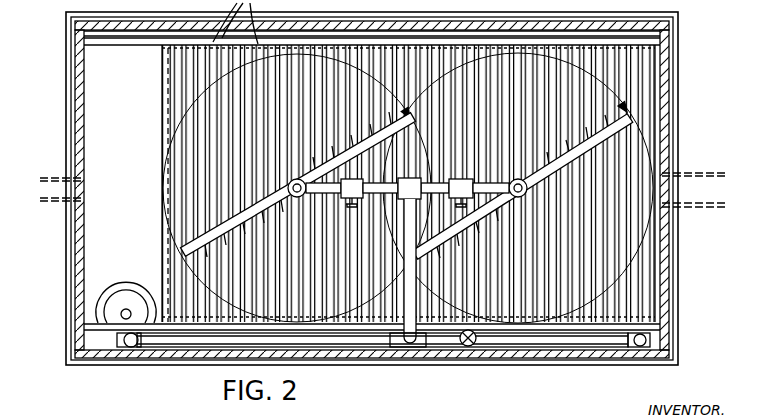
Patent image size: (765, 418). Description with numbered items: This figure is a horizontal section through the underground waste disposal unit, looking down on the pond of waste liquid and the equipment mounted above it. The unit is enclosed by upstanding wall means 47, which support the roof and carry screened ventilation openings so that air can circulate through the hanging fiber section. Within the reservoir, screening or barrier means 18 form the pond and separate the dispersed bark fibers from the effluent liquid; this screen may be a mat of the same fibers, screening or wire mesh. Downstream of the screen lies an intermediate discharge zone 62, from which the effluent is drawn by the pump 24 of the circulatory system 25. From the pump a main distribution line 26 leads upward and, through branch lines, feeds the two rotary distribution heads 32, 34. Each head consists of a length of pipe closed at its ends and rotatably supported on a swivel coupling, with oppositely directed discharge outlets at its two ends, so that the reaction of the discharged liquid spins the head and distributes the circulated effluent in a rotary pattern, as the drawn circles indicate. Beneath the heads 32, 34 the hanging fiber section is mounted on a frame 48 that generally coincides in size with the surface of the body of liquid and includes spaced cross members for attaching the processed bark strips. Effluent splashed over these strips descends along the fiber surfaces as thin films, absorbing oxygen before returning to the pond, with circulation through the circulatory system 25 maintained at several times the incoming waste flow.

The screening or barrier means 18 is at (160, 112).
The pump 24 is at (118, 338).
The circulatory system 25 is at (95, 300).
The main distribution line 26 is at (216, 337).
The distribution head 32 is at (193, 237).
The distribution head 34 is at (638, 137).
The upstanding wall means 47 is at (157, 362).
The frame 48 is at (383, 322).
The intermediate discharge zone 62 is at (96, 78).